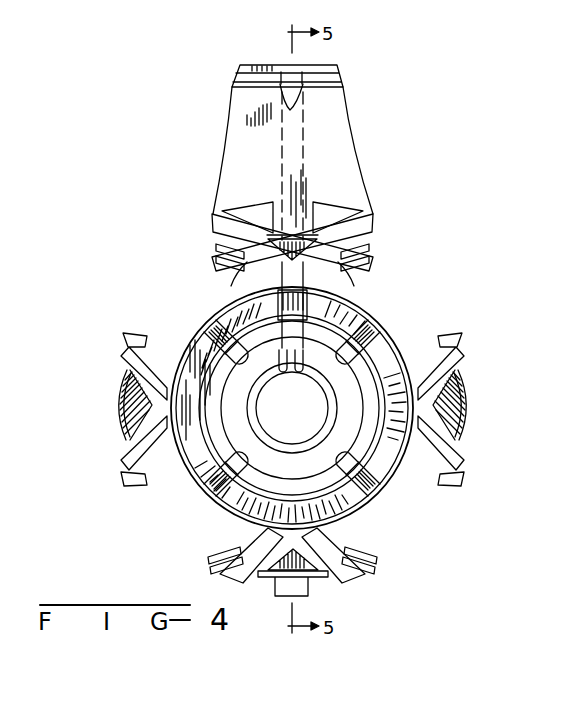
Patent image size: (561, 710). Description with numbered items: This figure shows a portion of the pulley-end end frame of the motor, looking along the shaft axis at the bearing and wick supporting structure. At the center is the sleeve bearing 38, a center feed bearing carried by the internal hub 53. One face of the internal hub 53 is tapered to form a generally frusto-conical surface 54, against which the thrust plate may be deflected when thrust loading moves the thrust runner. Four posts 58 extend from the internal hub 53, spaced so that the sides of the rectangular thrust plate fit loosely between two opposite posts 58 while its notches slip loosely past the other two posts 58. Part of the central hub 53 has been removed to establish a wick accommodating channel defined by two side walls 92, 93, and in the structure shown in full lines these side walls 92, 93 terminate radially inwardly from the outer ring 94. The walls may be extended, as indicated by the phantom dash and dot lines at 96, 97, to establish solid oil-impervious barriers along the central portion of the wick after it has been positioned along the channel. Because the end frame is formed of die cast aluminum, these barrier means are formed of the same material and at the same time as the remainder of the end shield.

The sleeve bearing 38 is at (327, 401).
The internal hub 53 is at (378, 350).
The frusto-conical surface 54 is at (323, 453).
The posts 58 is at (347, 346).
The side wall 92 is at (293, 330).
The side wall 93 is at (268, 386).
The outer ring 94 is at (322, 274).
The extended wall 96 is at (236, 303).
The extended wall 97 is at (362, 293).